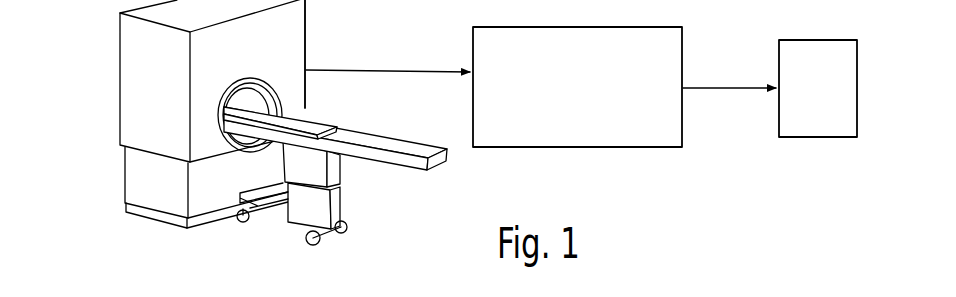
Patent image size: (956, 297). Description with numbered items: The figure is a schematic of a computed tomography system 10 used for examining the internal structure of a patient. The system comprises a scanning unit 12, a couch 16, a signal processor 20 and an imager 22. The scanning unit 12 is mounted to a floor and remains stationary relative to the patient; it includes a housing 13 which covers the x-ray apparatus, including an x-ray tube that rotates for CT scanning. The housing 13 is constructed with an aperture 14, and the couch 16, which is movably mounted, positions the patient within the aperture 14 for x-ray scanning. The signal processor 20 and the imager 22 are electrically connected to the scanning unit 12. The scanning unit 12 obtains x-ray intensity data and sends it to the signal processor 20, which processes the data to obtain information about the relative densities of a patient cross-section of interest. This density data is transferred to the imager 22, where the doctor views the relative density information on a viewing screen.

The computed tomography system 10 is at (253, 143).
The scanning unit 12 is at (114, 100).
The housing 13 is at (307, 25).
The aperture 14 is at (248, 79).
The couch 16 is at (382, 164).
The signal processor 20 is at (623, 148).
The imager 22 is at (807, 138).